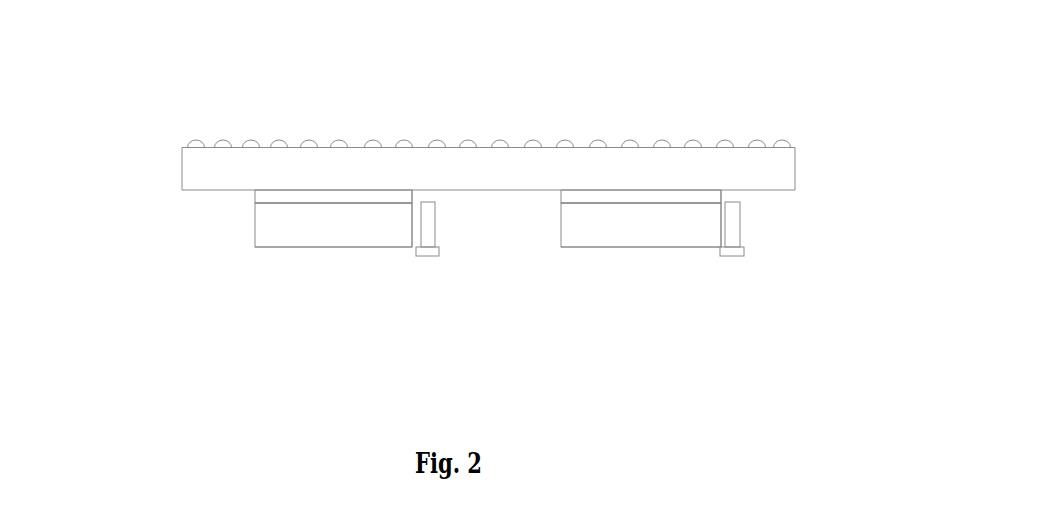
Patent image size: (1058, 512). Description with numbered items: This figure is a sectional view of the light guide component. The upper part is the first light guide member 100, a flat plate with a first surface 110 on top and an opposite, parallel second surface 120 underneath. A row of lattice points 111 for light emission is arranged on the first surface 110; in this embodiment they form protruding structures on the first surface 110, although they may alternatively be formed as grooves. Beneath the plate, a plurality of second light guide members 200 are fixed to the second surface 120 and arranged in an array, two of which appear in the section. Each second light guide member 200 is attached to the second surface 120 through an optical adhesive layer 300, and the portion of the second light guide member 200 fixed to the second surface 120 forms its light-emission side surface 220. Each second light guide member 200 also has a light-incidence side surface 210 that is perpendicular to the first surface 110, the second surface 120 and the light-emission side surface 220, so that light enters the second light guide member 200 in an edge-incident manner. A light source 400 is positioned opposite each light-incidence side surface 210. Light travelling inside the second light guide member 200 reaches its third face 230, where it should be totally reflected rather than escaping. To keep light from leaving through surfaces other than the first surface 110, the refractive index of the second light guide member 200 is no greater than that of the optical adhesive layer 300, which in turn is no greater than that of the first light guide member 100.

The first light guide member 100 is at (750, 167).
The first surface 110 is at (708, 138).
The lattice points 111 is at (501, 139).
The second surface 120 is at (760, 199).
The second light guide member 200 is at (280, 224).
The light-incidence side surface 210 is at (408, 222).
The light-emission side surface 220 is at (331, 213).
The third face 230 is at (276, 254).
The optical adhesive layer 300 is at (275, 197).
The light source 400 is at (430, 224).